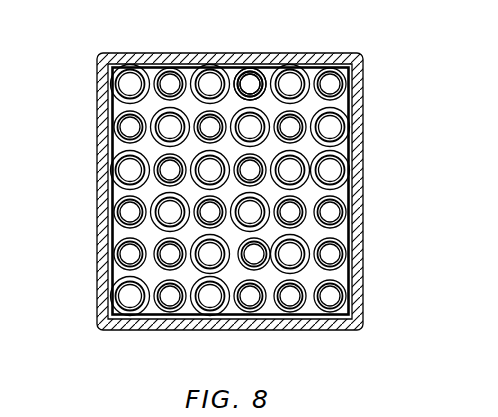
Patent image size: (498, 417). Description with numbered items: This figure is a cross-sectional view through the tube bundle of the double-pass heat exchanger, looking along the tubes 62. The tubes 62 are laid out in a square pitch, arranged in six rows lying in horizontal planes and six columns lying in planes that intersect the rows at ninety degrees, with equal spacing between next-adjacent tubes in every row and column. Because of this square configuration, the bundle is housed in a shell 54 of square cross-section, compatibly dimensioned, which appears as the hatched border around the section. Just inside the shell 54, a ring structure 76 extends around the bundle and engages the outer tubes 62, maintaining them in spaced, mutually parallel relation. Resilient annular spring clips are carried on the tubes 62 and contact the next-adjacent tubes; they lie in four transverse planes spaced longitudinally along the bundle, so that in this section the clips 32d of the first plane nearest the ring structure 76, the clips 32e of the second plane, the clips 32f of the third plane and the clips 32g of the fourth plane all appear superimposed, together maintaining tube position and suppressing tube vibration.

The shell 54 is at (124, 53).
The ring structure 76 is at (356, 54).
The tube 62 is at (228, 333).
The spring clip 32d is at (113, 92).
The spring clip 32e is at (132, 127).
The spring clip 32f is at (118, 143).
The spring clip 32g is at (128, 172).